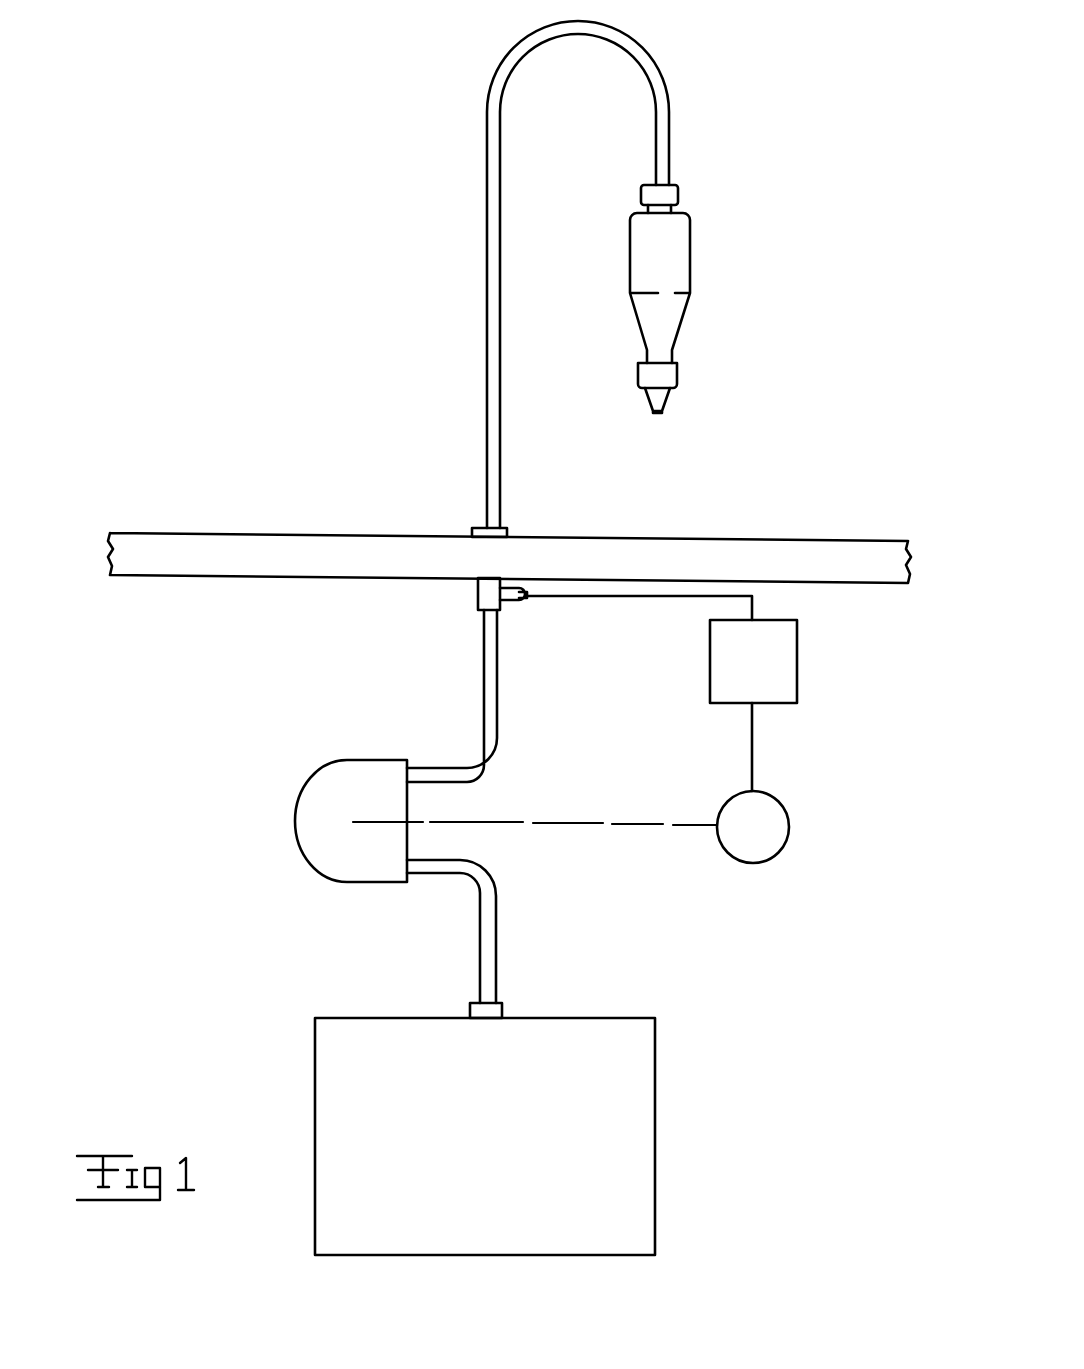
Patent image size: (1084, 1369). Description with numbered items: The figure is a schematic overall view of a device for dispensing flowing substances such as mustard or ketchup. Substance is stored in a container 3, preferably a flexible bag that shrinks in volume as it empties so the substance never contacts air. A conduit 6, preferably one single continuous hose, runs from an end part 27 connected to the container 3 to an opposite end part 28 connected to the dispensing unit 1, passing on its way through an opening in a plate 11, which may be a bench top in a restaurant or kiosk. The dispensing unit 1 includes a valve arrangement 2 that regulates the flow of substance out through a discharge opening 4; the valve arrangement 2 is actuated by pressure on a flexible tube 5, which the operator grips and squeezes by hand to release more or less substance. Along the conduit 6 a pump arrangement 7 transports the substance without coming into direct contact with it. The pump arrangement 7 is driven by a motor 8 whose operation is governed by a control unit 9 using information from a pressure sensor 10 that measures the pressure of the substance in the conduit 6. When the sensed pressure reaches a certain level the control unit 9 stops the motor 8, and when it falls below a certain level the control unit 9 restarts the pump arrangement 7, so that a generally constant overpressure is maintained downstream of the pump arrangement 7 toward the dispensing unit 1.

The dispensing unit 1 is at (757, 262).
The valve arrangement 2 is at (660, 355).
The container 3 is at (325, 1083).
The discharge opening 4 is at (657, 413).
The tube 5 is at (680, 258).
The conduit 6 is at (490, 360).
The pump arrangement 7 is at (318, 787).
The motor 8 is at (733, 816).
The control unit 9 is at (723, 673).
The pressure sensor 10 is at (520, 600).
The plate 11 is at (310, 548).
The end part 27 is at (487, 992).
The end part 28 is at (660, 184).